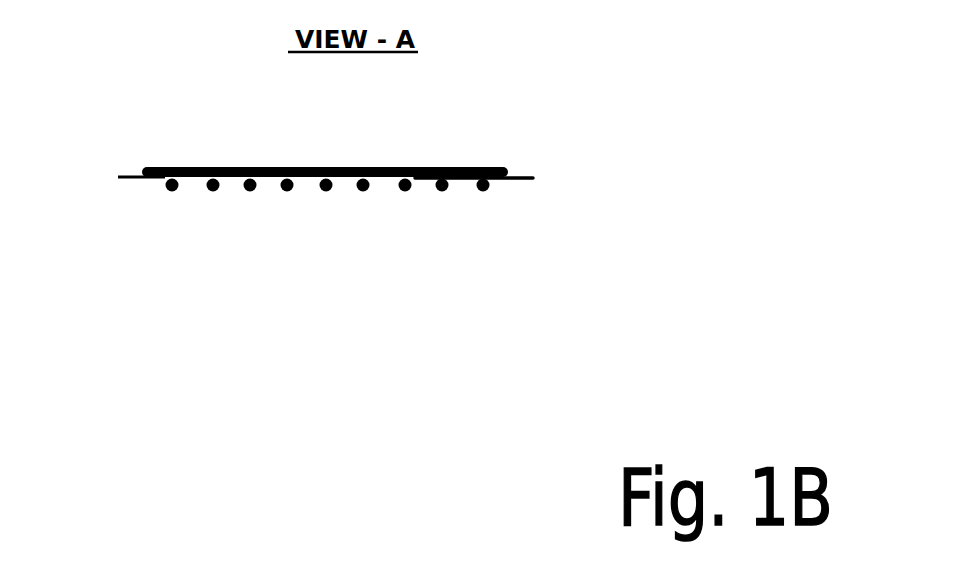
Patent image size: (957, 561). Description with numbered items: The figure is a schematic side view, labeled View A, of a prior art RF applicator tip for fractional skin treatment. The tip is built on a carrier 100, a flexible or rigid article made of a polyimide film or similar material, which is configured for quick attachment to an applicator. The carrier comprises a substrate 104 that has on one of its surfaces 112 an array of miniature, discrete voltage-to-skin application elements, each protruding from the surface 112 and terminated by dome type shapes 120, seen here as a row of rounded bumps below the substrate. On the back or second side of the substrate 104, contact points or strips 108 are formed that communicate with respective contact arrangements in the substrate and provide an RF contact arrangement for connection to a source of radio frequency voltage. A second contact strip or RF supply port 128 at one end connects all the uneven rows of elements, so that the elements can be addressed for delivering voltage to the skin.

The carrier 100 is at (397, 136).
The substrate 104 is at (530, 177).
The contact strips 108 is at (176, 172).
The surface of substrate 112 is at (513, 181).
The dome type shapes 120 is at (213, 191).
The second contact strip 128 is at (137, 172).